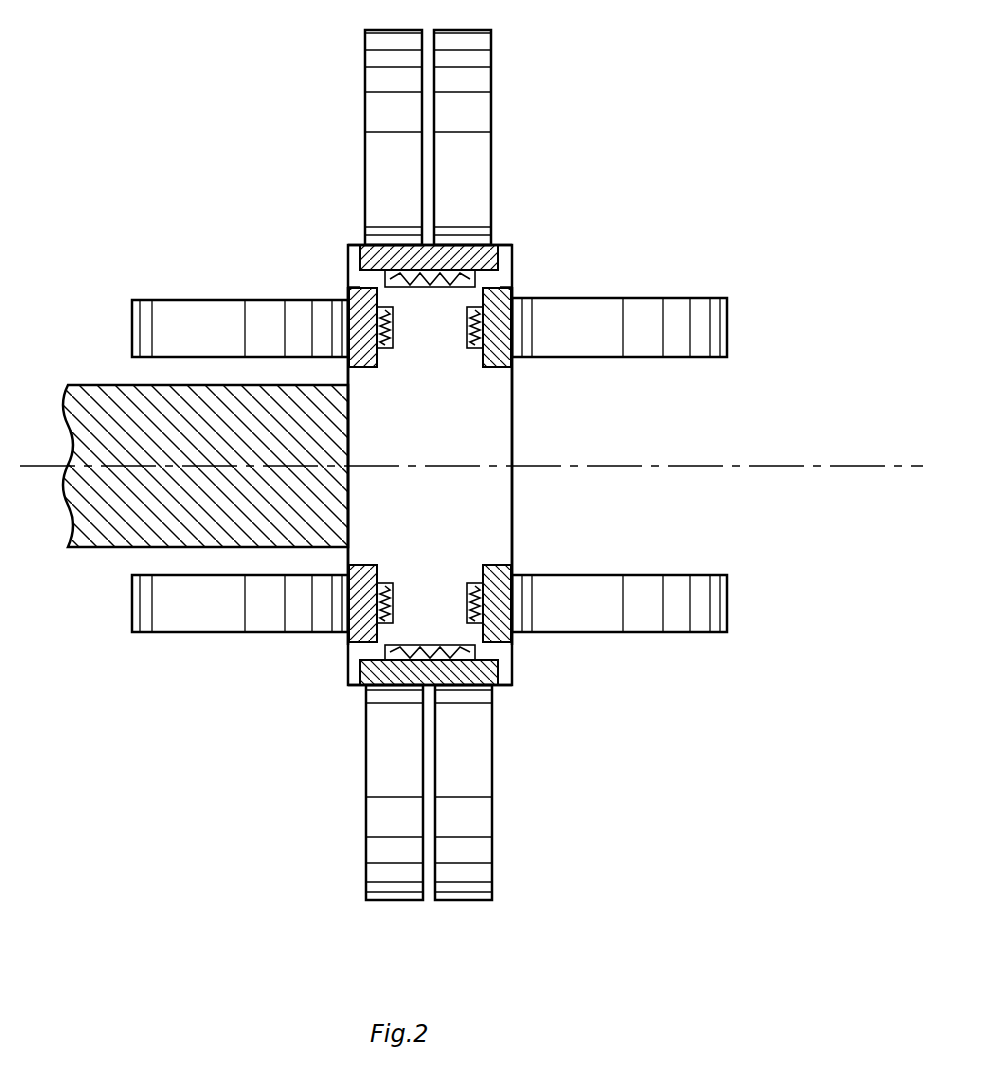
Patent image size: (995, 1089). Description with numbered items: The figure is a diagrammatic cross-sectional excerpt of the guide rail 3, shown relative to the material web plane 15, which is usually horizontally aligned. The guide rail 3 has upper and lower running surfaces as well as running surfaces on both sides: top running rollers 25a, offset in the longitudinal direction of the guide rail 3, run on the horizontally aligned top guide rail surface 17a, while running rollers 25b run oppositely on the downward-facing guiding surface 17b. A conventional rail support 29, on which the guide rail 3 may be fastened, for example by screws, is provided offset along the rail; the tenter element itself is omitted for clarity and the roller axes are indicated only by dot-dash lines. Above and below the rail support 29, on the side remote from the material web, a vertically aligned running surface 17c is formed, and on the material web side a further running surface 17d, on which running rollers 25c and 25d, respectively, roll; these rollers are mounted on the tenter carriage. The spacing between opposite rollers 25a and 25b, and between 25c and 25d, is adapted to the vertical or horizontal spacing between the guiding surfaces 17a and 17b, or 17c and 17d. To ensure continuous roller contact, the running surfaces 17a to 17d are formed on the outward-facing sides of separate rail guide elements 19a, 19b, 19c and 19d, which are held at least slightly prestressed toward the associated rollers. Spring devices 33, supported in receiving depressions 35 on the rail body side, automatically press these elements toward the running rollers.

The guide rail 3 is at (497, 455).
The material web plane 15 is at (803, 452).
The top guide rail surface 17a is at (473, 258).
The downward-facing guiding surface 17b is at (460, 690).
The vertically aligned running surface 17c is at (347, 297).
The further running surface 17d is at (515, 318).
The rail guide element 19a is at (380, 250).
The rail guide element 19b is at (400, 718).
The rail guide element 19c is at (350, 352).
The rail guide element 19d is at (542, 357).
The top running rollers 25a is at (395, 147).
The running rollers 25b is at (452, 892).
The running rollers 25c is at (155, 333).
The running rollers 25d is at (710, 328).
The rail support 29 is at (112, 538).
The spring devices 33 is at (475, 345).
The receiving depressions 35 is at (505, 277).